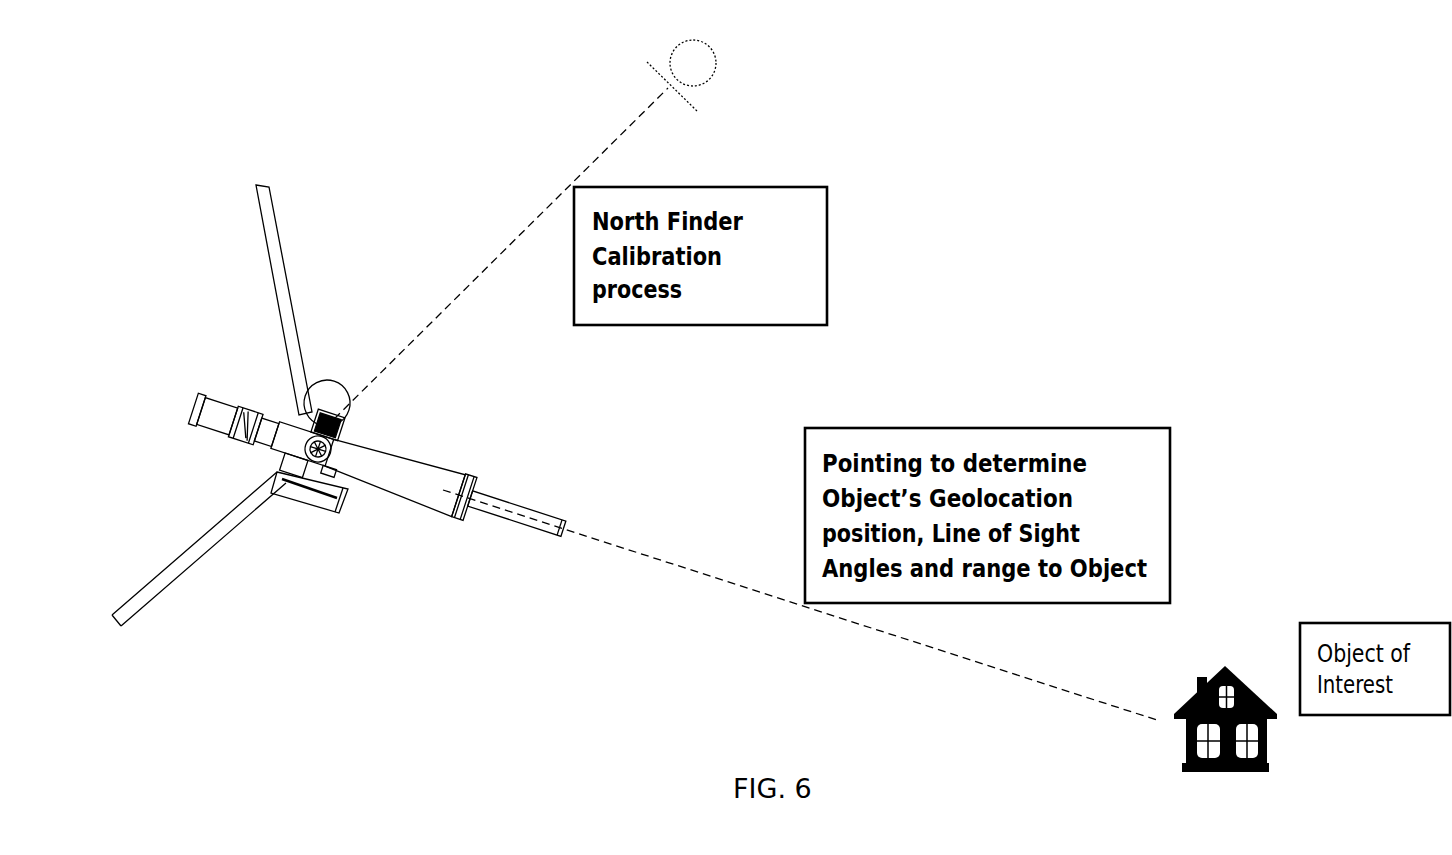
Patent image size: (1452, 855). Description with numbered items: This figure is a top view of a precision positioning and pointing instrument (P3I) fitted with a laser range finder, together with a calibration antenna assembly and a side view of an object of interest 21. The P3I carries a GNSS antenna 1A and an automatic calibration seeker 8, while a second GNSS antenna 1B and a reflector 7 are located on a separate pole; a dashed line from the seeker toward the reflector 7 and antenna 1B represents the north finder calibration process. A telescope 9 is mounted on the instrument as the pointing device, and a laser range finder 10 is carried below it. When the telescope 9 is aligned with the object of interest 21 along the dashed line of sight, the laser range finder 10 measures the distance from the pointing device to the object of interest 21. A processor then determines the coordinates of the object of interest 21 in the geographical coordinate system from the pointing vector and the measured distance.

The GNSS antenna 1A is at (325, 392).
The GNSS antenna 1B is at (707, 58).
The reflector 7 is at (663, 78).
The automatic calibration seeker 8 is at (332, 441).
The telescope 9 is at (408, 482).
The laser range finder 10 is at (308, 505).
The object of interest 21 is at (1260, 685).